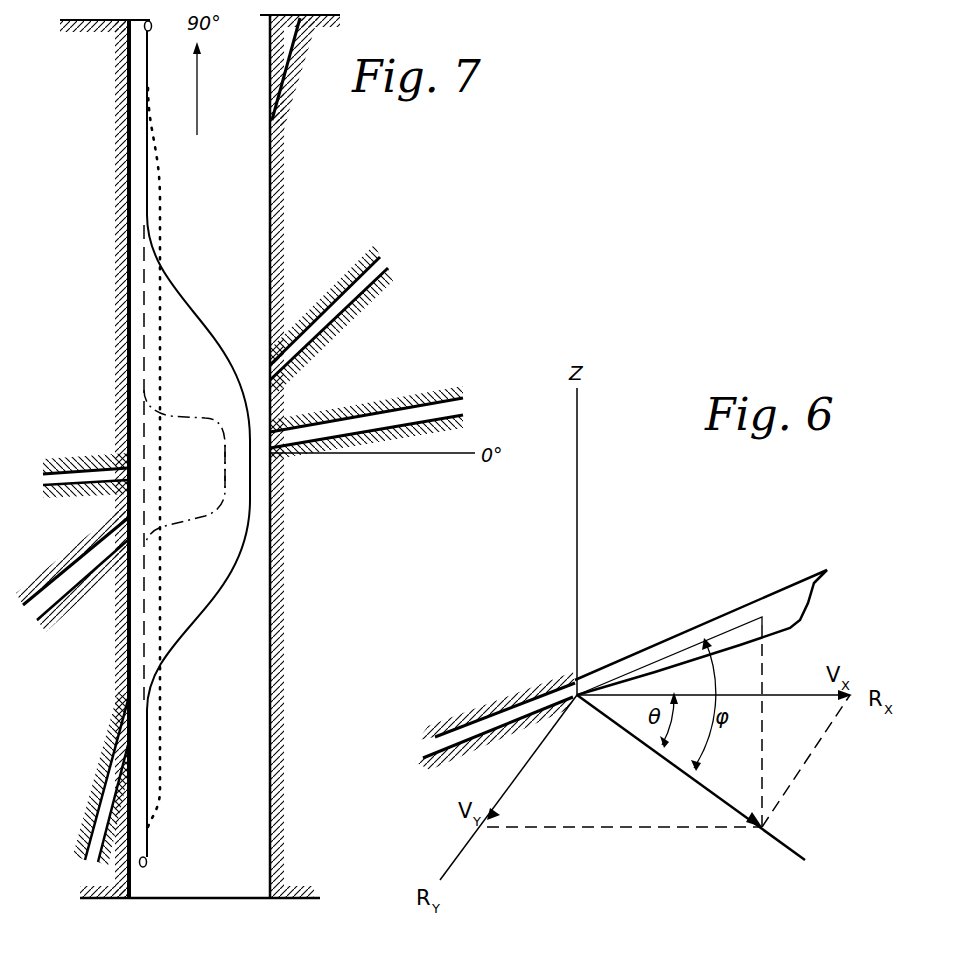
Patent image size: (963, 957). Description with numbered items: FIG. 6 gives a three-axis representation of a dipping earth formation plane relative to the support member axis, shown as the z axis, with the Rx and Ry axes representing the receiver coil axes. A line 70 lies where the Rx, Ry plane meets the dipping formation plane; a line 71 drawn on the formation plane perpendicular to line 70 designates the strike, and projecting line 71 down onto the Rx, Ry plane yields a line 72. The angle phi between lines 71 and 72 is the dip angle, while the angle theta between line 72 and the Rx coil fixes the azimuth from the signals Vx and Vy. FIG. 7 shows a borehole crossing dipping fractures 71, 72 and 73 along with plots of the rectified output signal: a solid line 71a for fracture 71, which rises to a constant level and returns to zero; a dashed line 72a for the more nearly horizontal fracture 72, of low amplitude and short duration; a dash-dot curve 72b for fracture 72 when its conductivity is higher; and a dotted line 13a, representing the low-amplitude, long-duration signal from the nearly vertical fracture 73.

In FIG. 7, the tool travel path 13a is at (160, 204).
In FIG. 7, the solid line signal 71a is at (205, 310).
In FIG. 7, the dashed line signal 72a is at (160, 419).
In FIG. 7, the dash-dot curve 72b is at (225, 475).
In FIG. 7, the fracture 73 is at (285, 125).
In FIG. 7, the line (strike of dipping formation) / fracture 71 is at (354, 273).
In FIG. 6, the line (strike of dipping formation) / fracture 71 is at (655, 660).
In FIG. 7, the line (projection) / fracture 72 is at (403, 412).
In FIG. 6, the line (projection) / fracture 72 is at (785, 843).
In FIG. 6, the line 70 is at (560, 675).